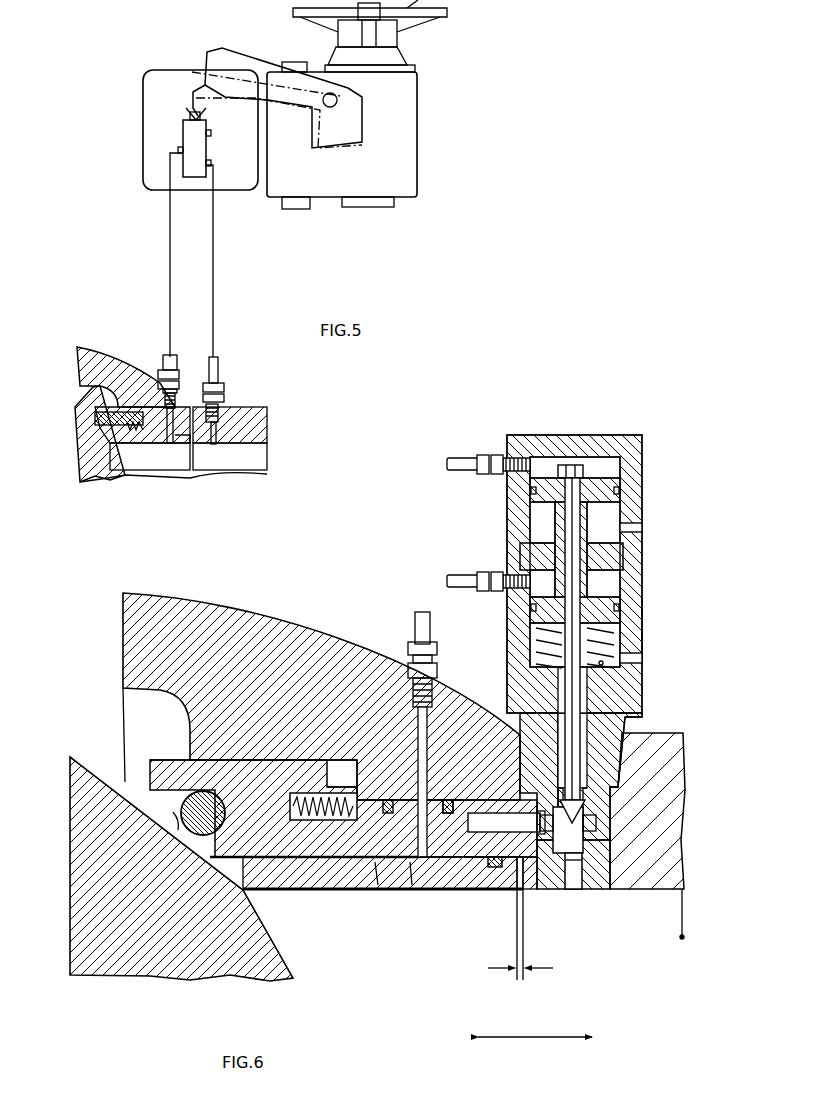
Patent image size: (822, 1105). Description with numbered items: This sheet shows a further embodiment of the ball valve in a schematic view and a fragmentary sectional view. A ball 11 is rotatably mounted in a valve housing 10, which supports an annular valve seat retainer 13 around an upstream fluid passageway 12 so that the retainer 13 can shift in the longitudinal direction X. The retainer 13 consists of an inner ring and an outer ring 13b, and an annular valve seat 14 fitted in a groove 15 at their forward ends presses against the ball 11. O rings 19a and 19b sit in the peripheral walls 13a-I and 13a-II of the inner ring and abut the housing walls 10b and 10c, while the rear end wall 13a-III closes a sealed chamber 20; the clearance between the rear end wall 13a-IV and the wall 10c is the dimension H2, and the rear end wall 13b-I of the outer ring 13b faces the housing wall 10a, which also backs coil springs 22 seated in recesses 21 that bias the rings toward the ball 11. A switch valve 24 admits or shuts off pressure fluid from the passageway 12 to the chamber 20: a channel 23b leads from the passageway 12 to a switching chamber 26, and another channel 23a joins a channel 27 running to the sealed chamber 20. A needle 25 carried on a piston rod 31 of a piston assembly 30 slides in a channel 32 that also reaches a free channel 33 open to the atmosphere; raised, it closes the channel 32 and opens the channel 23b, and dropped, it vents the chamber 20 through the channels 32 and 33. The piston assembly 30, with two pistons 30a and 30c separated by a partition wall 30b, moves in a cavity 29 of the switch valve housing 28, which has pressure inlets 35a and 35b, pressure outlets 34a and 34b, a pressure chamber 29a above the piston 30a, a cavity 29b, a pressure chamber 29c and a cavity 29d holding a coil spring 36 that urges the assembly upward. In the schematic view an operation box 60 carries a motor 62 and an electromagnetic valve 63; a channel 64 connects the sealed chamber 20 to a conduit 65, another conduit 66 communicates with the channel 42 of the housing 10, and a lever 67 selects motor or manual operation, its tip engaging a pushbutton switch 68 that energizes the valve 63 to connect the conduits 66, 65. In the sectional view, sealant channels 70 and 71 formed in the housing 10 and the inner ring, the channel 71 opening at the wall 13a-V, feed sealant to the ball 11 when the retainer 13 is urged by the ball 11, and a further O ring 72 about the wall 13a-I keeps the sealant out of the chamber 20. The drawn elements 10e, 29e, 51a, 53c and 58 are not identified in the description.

In FIG. 5, the valve housing 10 is at (108, 362).
In FIG. 6, the valve housing 10 is at (252, 681).
In FIG. 6, the inner peripheral wall 10a is at (375, 798).
In FIG. 6, the inner peripheral wall 10b is at (372, 862).
In FIG. 6, the inner peripheral wall 10c is at (480, 860).
In FIG. 6, the housing lip 10e is at (528, 890).
In FIG. 5, the ball 11 is at (78, 428).
In FIG. 6, the ball 11 is at (74, 893).
In FIG. 6, the upstream fluid passageway 12 is at (604, 982).
In FIG. 5, the valve seat retainer 13 is at (130, 452).
In FIG. 6, the valve seat retainer 13 is at (345, 900).
In FIG. 6, the peripheral wall of inner ring 13a-I is at (438, 800).
In FIG. 6, the peripheral wall of inner ring 13a-II is at (488, 835).
In FIG. 6, the rear end wall of inner ring 13a-III is at (450, 860).
In FIG. 6, the rear end wall of inner ring 13a-IV is at (518, 890).
In FIG. 6, the wall of inner ring 13a-V is at (255, 890).
In FIG. 6, the outer ring 13b is at (163, 764).
In FIG. 6, the rear end wall of outer ring 13b-I is at (345, 765).
In FIG. 6, the valve seat 14 is at (218, 812).
In FIG. 6, the groove 15 is at (173, 830).
In FIG. 6, the O ring 19a is at (388, 800).
In FIG. 6, the O ring 19b is at (494, 868).
In FIG. 5, the sealed chamber 20 is at (178, 445).
In FIG. 6, the sealed chamber 20 is at (448, 815).
In FIG. 6, the recesses 21 is at (338, 818).
In FIG. 6, the coil spring 22 is at (300, 815).
In FIG. 6, the channel 23a is at (572, 889).
In FIG. 6, the channel 23b is at (592, 888).
In FIG. 6, the switch valve 24 is at (658, 612).
In FIG. 6, the needle 25 is at (585, 820).
In FIG. 6, the switching chamber 26 is at (585, 847).
In FIG. 6, the channel 27 is at (525, 810).
In FIG. 6, the switch valve housing 28 is at (644, 628).
In FIG. 6, the cavity 29 is at (612, 508).
In FIG. 6, the pressure chamber 29a is at (604, 462).
In FIG. 6, the cavity 29b is at (605, 492).
In FIG. 6, the pressure chamber 29c is at (605, 592).
In FIG. 6, the cavity 29d is at (612, 642).
In FIG. 6, the valve needle rod 29e is at (572, 650).
In FIG. 6, the piston assembly 30 is at (545, 520).
In FIG. 6, the piston 30a is at (607, 476).
In FIG. 6, the partition wall 30b is at (535, 546).
In FIG. 6, the piston 30c is at (612, 597).
In FIG. 6, the piston rod 31 is at (590, 757).
In FIG. 6, the channel 32 is at (608, 778).
In FIG. 6, the free channel 33 is at (638, 706).
In FIG. 6, the pressure outlet 34a is at (644, 528).
In FIG. 6, the pressure outlet 34b is at (644, 658).
In FIG. 6, the pressure inlet 35a is at (518, 455).
In FIG. 6, the pressure inlet 35b is at (512, 592).
In FIG. 6, the coil spring 36 is at (535, 637).
In FIG. 5, the channel 42 is at (216, 452).
In FIG. 6, the fluid line fitting 51a is at (462, 575).
In FIG. 6, the fluid line fitting 53c is at (460, 456).
In FIG. 6, the clearance channel 58 is at (122, 722).
In FIG. 5, the operation box 60 is at (378, 250).
In FIG. 5, the motor 62 is at (148, 153).
In FIG. 5, the electromagnetic valve 63 is at (196, 178).
In FIG. 5, the channel 64 is at (183, 402).
In FIG. 5, the conduit 65 is at (168, 255).
In FIG. 5, the conduit 66 is at (215, 255).
In FIG. 5, the lever 67 is at (218, 50).
In FIG. 5, the pushbutton switch 68 is at (186, 110).
In FIG. 6, the channel 70 is at (412, 728).
In FIG. 6, the channel 71 is at (377, 890).
In FIG. 6, the O ring 72 is at (412, 890).
In FIG. 6, the clearance dimension H2 is at (520, 972).
In FIG. 6, the longitudinal direction X is at (508, 1032).